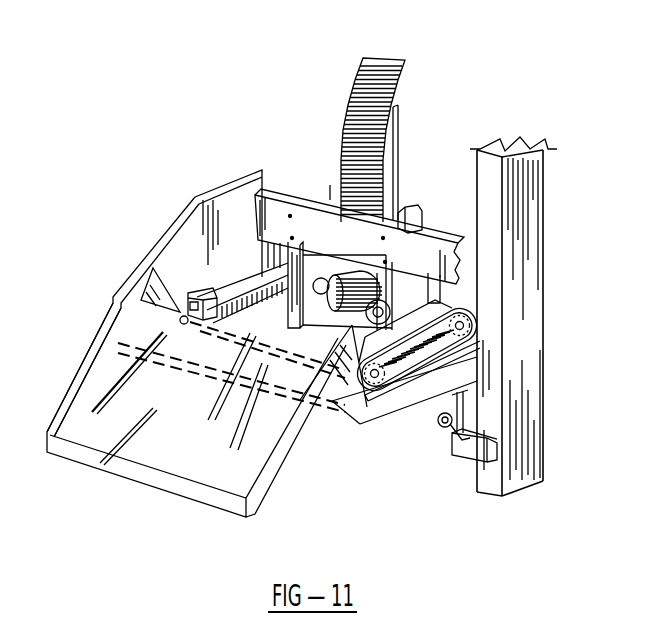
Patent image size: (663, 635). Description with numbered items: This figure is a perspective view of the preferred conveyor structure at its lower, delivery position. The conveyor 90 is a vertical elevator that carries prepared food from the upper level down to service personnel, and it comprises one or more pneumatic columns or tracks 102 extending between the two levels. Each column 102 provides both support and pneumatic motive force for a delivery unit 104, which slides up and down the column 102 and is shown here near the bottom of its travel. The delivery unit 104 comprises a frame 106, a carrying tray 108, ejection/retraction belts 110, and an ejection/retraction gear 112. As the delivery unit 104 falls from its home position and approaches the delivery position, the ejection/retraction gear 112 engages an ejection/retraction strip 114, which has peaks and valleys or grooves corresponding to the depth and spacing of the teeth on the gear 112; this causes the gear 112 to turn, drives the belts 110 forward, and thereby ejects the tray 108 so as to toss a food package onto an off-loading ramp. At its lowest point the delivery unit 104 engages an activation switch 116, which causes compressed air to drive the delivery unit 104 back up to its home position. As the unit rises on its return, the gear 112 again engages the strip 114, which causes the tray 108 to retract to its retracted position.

The conveyor 90 is at (493, 93).
The pneumatic column 102 is at (538, 180).
The delivery unit 104 is at (402, 472).
The frame 106 is at (306, 190).
The carrying tray 108 is at (97, 383).
The ejection/retraction belts 110 is at (250, 281).
The ejection/retraction gear 112 is at (364, 330).
The ejection/retraction strip 114 is at (354, 82).
The activation switch 116 is at (470, 421).